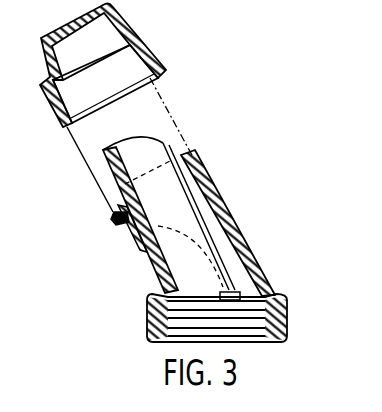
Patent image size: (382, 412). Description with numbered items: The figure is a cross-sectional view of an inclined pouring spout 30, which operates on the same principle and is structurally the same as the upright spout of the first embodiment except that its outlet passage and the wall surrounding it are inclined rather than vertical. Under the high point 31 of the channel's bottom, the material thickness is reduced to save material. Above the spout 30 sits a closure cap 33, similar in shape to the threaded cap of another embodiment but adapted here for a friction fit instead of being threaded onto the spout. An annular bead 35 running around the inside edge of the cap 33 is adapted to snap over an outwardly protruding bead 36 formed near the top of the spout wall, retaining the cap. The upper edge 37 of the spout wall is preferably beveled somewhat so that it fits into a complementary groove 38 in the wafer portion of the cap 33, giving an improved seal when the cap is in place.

The spout 30 is at (203, 246).
The high point 31 is at (118, 194).
The closure cap 33 is at (132, 65).
The annular bead 35 is at (148, 87).
The outwardly protruding bead 36 is at (209, 176).
The upper edge 37 is at (188, 154).
The groove 38 is at (137, 33).